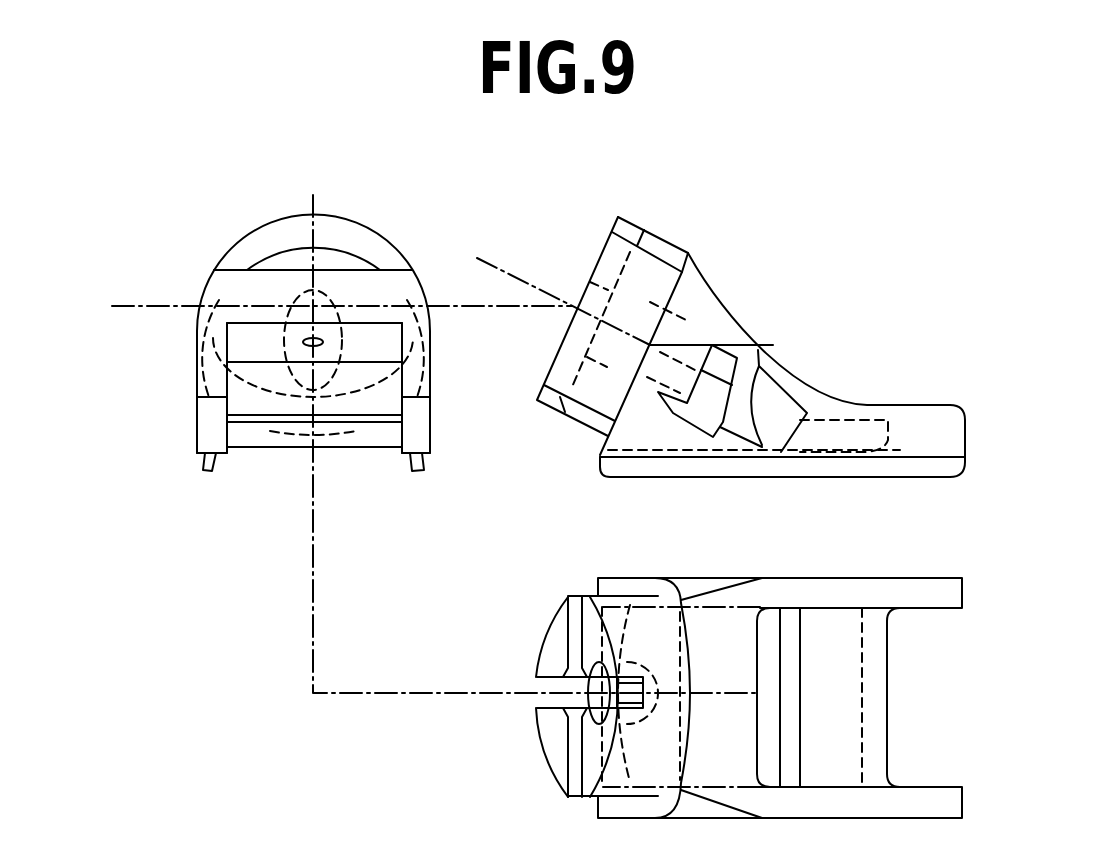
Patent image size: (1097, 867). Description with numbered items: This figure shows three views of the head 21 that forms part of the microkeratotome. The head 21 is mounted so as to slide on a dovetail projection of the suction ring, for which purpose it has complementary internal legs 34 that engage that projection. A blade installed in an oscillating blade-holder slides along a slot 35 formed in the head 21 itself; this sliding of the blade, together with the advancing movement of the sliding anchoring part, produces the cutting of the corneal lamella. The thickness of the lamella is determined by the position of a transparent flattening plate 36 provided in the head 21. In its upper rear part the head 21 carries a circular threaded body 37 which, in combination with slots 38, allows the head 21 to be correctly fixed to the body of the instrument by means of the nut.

The head 21 is at (352, 237).
The internal legs 34 is at (412, 468).
The slot 35 is at (737, 360).
The transparent flattening plate 36 is at (887, 682).
The circular threaded body 37 is at (548, 777).
The slots 38 is at (550, 688).